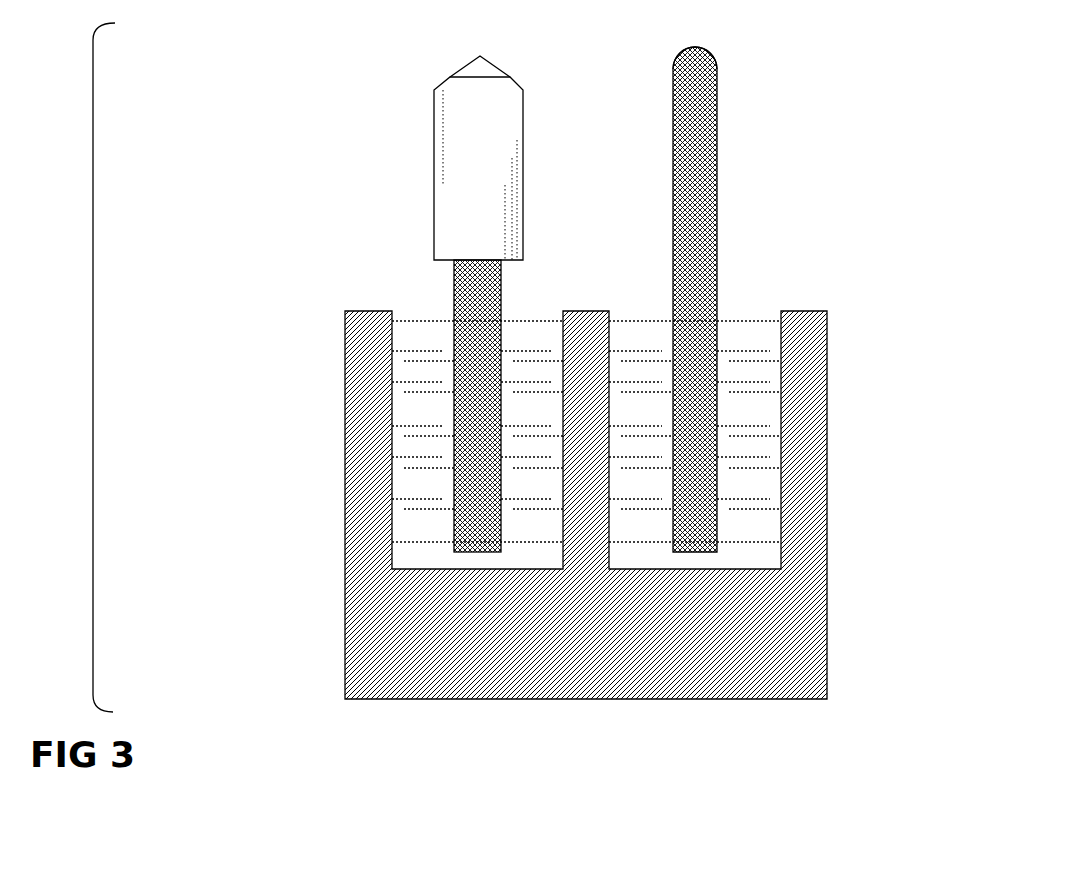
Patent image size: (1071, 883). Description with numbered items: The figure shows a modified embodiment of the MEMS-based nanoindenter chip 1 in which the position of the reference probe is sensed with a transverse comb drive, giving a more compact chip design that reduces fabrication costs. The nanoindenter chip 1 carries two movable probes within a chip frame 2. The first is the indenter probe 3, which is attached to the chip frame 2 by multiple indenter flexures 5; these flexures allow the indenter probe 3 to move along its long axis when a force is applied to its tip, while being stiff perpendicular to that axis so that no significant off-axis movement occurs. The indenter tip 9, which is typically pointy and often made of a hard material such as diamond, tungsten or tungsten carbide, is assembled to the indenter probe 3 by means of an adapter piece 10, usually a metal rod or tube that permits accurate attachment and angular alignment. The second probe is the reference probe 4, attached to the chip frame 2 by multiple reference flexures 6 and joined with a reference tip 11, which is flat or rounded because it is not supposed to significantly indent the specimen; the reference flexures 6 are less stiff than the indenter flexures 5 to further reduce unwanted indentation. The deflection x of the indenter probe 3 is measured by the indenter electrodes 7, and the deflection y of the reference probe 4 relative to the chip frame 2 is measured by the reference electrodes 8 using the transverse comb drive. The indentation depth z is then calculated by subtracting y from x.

The nanoindenter chip 1 is at (93, 368).
The chip frame 2 is at (808, 668).
The indenter probe 3 is at (473, 278).
The reference probe 4 is at (690, 230).
The indenter flexures 5 is at (533, 320).
The reference flexures 6 is at (637, 320).
The indenter electrodes 7 is at (542, 459).
The reference electrodes 8 is at (660, 428).
The indenter tip 9 is at (465, 70).
The adapter piece 10 is at (463, 138).
The reference tip 11 is at (695, 48).